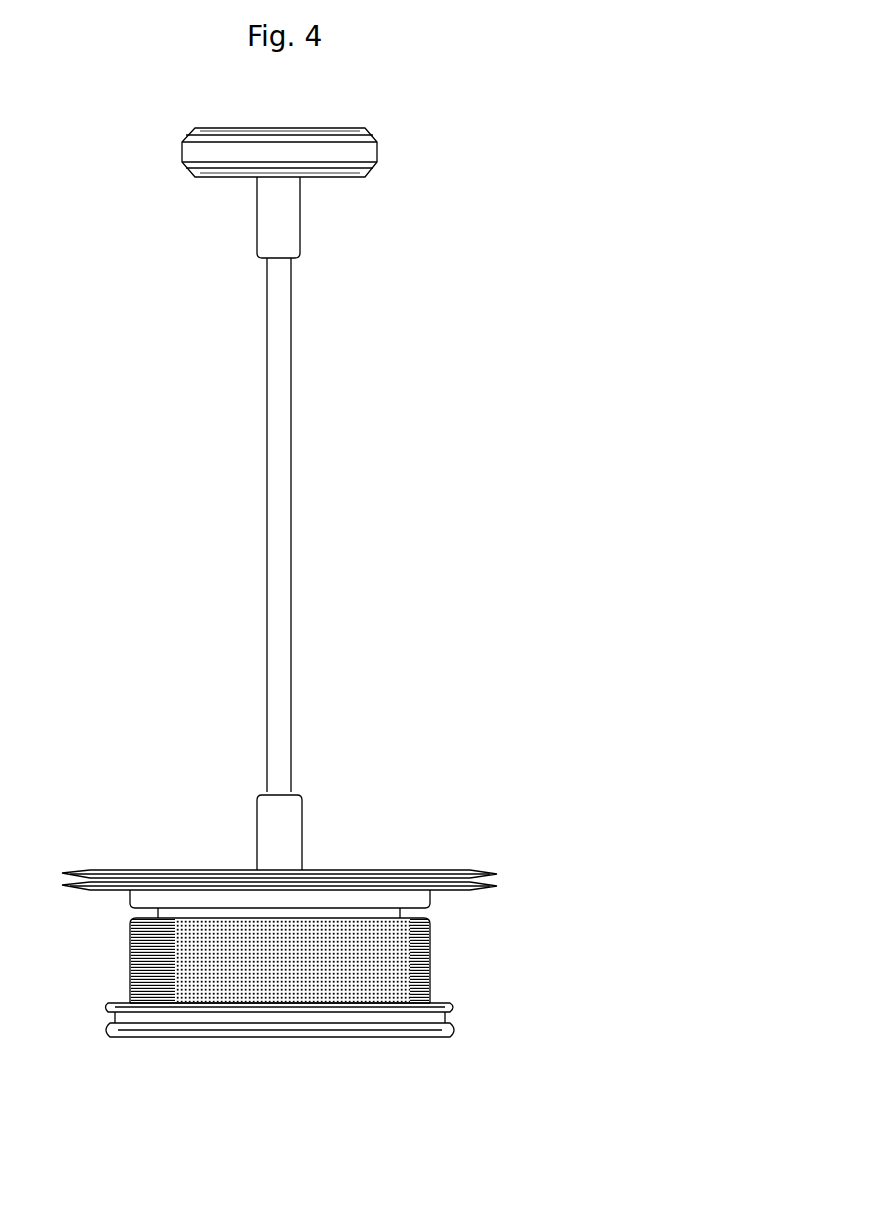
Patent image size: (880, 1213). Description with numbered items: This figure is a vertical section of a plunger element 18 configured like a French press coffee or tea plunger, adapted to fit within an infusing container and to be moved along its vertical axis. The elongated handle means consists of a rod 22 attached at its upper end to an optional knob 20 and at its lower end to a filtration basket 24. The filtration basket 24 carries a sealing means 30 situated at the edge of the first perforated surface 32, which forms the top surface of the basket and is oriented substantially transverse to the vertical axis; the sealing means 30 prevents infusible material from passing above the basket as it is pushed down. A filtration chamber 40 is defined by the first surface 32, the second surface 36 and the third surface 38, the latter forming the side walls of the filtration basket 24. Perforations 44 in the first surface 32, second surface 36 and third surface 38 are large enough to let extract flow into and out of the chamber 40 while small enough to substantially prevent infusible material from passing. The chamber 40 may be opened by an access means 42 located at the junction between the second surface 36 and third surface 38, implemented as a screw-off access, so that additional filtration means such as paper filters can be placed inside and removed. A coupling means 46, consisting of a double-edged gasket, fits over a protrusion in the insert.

The plunger element 18 is at (497, 170).
The knob 20 is at (367, 135).
The rod 22 is at (292, 338).
The filtration basket 24 is at (279, 1006).
The sealing means 30 is at (497, 884).
The first perforated surface 32 is at (360, 870).
The second surface 36 is at (302, 1043).
The third surface 38 is at (407, 953).
The filtration chamber 40 is at (118, 957).
The access means 42 is at (430, 1003).
The perforations 44 is at (193, 988).
The coupling means 46 is at (120, 1015).